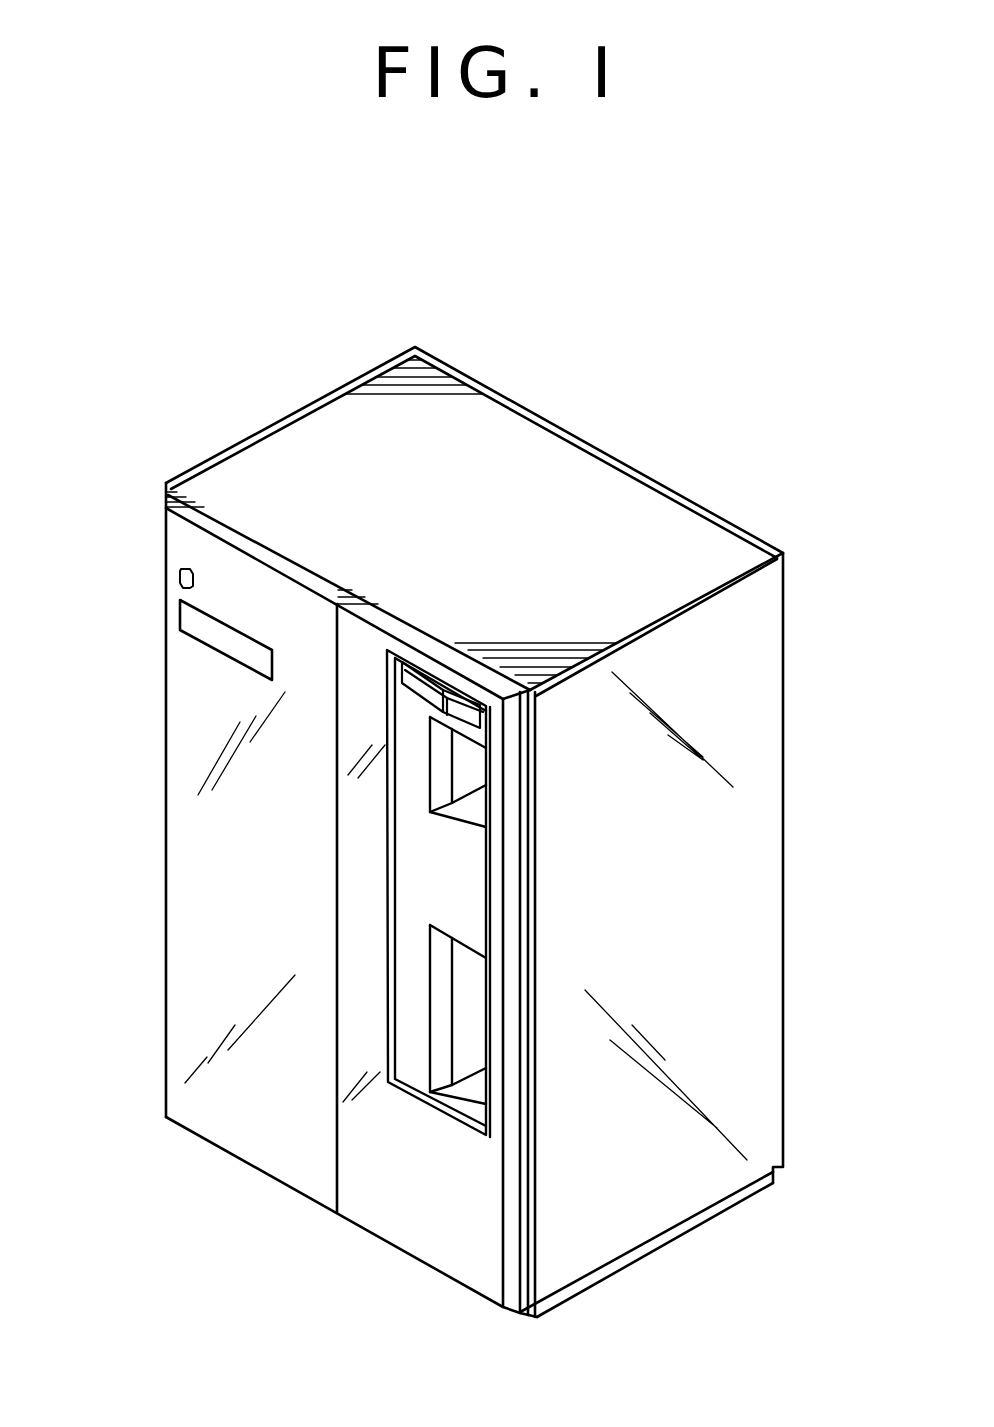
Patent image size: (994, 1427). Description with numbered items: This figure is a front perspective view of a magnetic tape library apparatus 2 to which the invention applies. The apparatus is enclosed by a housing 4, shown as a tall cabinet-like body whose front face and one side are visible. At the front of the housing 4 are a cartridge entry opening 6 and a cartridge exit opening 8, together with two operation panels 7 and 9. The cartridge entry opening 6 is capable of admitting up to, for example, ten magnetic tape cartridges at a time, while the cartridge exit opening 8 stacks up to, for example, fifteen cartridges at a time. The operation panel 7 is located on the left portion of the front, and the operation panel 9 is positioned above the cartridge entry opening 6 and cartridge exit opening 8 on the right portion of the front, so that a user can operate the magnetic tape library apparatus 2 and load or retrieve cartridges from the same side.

The magnetic tape library apparatus 2 is at (637, 455).
The housing 4 is at (760, 739).
The cartridge entry opening 6 is at (470, 760).
The operation panel 7 is at (203, 624).
The cartridge exit opening 8 is at (475, 1025).
The operation panel 9 is at (427, 680).